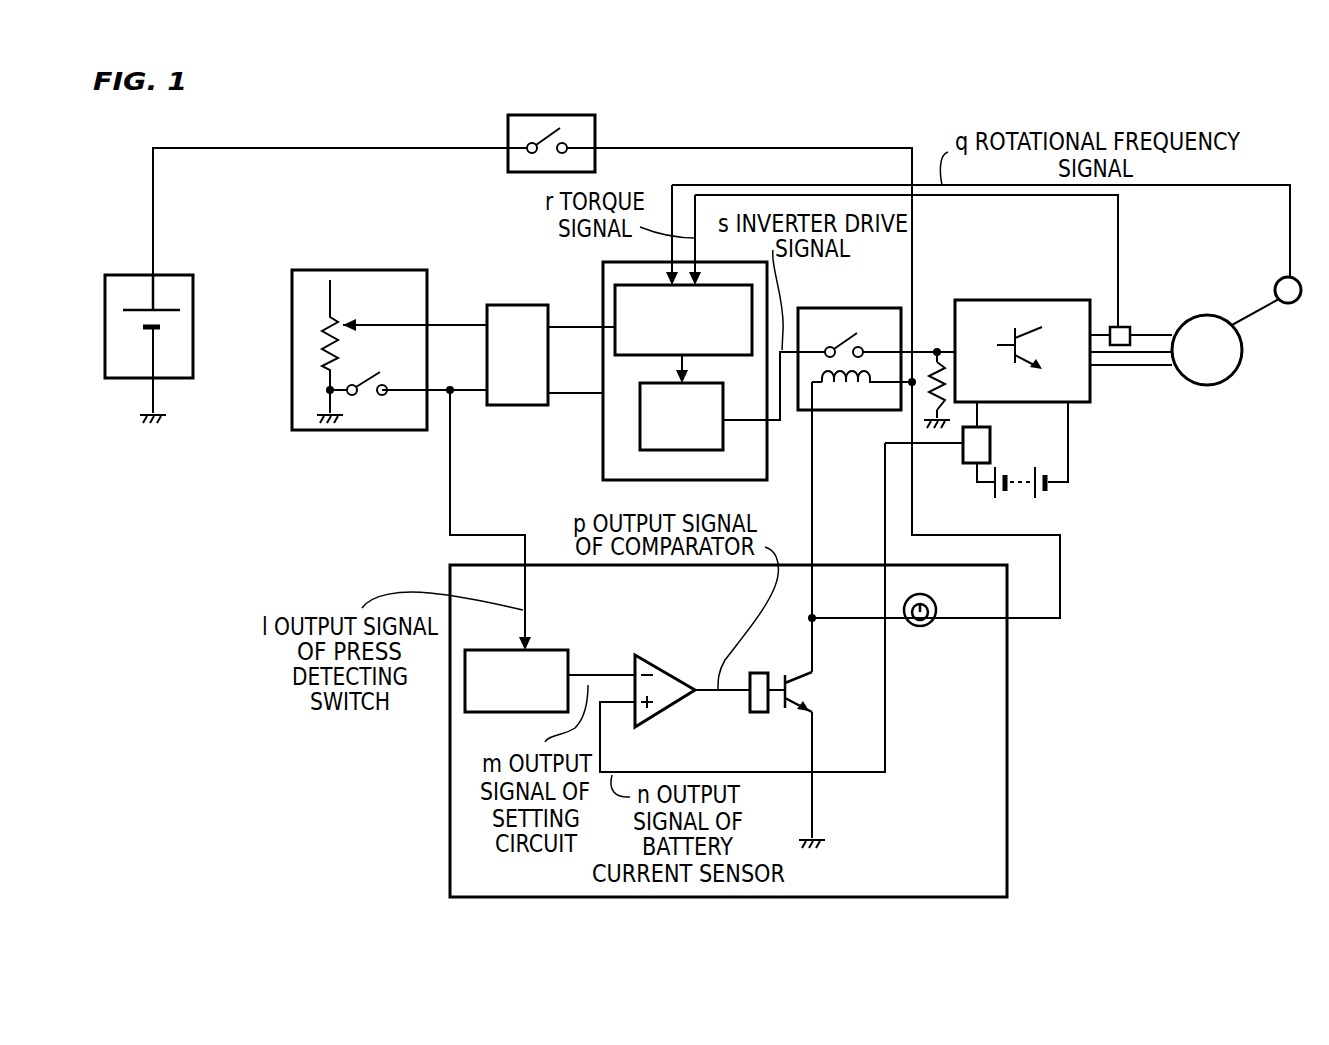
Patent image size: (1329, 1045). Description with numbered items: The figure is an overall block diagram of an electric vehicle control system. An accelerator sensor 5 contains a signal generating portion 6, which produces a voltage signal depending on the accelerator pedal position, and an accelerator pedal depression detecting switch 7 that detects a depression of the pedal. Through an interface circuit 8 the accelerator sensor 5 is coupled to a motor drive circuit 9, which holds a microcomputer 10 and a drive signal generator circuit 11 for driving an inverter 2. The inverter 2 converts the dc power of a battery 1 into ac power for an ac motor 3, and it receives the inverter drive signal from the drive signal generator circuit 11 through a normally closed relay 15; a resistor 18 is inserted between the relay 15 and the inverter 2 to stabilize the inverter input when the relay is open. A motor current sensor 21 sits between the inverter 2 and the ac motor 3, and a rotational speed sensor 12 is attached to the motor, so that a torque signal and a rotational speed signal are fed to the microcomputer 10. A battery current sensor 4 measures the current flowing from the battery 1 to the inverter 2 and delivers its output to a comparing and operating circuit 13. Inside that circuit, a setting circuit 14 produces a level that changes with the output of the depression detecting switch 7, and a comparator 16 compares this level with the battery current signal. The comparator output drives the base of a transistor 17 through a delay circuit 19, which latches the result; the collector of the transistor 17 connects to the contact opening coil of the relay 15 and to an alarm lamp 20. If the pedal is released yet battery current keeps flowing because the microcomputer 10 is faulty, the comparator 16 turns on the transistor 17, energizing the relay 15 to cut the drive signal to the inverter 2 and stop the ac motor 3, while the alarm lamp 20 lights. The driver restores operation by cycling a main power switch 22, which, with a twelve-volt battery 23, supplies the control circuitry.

The battery 1 is at (1020, 467).
The inverter 2 is at (987, 300).
The ac motor 3 is at (1192, 385).
The battery current sensor 4 is at (972, 463).
The accelerator sensor 5 is at (328, 270).
The signal generating portion 6 is at (328, 350).
The accelerator pedal depression detecting switch 7 is at (378, 395).
The interface circuit 8 is at (507, 305).
The motor drive circuit 9 is at (603, 480).
The microcomputer 10 is at (615, 305).
The drive signal generator circuit 11 is at (640, 408).
The rotational speed sensor 12 is at (1302, 287).
The comparing and operating circuit 13 is at (525, 898).
The setting circuit 14 is at (512, 713).
The relay 15 is at (798, 308).
The comparator 16 is at (677, 670).
The transistor 17 is at (810, 692).
The resistor 18 is at (933, 340).
The delay circuit 19 is at (752, 702).
The alarm lamp 20 is at (937, 600).
The motor current sensor 21 is at (1127, 327).
The main power switch 22 is at (523, 115).
The 12V battery 23 is at (140, 272).